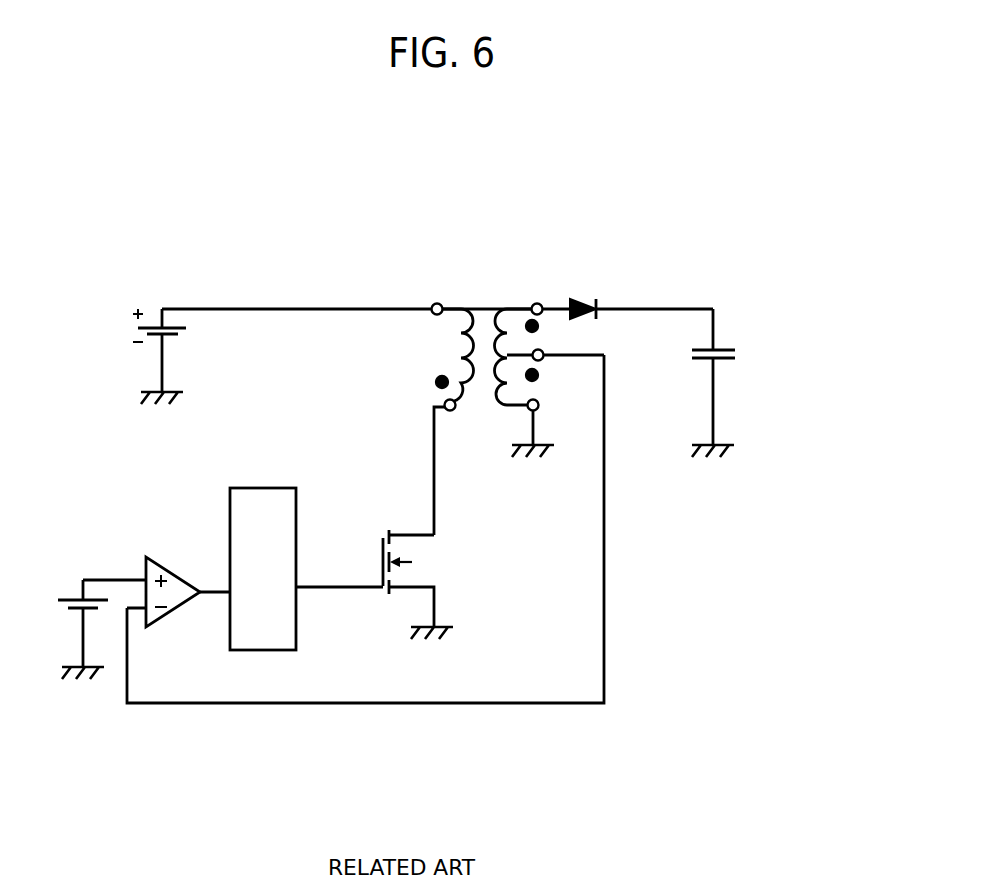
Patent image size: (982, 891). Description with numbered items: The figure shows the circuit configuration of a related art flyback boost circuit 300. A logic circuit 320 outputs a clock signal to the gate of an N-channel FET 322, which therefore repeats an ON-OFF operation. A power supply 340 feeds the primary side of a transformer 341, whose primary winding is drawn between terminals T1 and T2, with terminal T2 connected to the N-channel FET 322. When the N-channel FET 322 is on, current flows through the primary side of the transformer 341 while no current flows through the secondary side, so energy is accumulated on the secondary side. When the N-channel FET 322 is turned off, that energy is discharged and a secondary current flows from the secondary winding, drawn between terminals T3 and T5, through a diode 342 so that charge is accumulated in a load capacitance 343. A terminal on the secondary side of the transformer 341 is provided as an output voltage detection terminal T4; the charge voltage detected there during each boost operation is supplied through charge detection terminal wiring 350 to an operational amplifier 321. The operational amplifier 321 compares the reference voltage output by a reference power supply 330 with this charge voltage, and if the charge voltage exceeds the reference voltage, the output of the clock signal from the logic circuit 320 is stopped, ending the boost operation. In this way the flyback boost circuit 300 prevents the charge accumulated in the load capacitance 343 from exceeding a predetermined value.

The flyback boost circuit 300 is at (198, 210).
The logic circuit 320 is at (266, 488).
The operational amplifier 321 is at (167, 568).
The N-channel FET 322 is at (425, 562).
The reference power supply 330 is at (77, 597).
The battery / power supply 340 is at (188, 334).
The transformer 341 is at (528, 294).
The diode 342 is at (583, 299).
The load capacitance 343 is at (742, 348).
The charge detection terminal wiring 350 is at (607, 557).
The transformer terminal T1 is at (436, 302).
The transformer terminal T2 is at (453, 412).
The transformer terminal T3 is at (535, 302).
The output voltage detection terminal T4 is at (542, 359).
The transformer terminal T5 is at (538, 402).